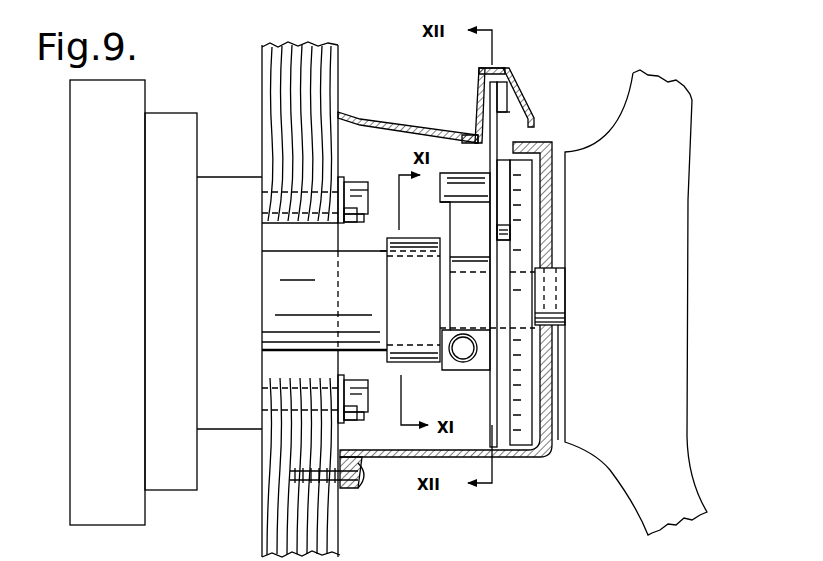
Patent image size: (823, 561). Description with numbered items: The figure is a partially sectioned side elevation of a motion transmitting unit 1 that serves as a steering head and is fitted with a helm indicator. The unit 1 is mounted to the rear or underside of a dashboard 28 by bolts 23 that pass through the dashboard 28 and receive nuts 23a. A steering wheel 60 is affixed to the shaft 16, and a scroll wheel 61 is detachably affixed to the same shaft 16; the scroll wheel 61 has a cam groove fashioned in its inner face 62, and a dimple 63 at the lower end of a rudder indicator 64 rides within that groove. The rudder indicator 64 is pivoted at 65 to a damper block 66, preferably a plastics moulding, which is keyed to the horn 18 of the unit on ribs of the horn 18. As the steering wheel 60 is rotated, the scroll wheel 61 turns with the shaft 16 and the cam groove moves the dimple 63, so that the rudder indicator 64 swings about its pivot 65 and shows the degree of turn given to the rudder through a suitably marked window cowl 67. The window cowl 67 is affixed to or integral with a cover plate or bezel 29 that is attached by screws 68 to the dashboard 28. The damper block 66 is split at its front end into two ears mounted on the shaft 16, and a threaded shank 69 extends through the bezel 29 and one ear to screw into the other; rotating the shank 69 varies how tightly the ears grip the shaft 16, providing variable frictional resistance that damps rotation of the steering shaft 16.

The motion transmitting unit 1 is at (172, 112).
The shaft 16 is at (550, 300).
The horn 18 is at (282, 305).
The bolts 23 is at (366, 192).
The nuts 23a is at (374, 232).
The dashboard 28 is at (328, 528).
The cover plate or bezel 29 is at (400, 131).
The steering wheel 60 is at (666, 272).
The scroll wheel 61 is at (523, 242).
The inner face 62 is at (530, 155).
The dimple 63 is at (502, 232).
The rudder indicator 64 is at (504, 99).
The pivot 65 is at (497, 186).
The damper block 66 is at (442, 239).
The window cowl 67 is at (510, 68).
The screws 68 is at (368, 480).
The threaded shank 69 is at (464, 356).